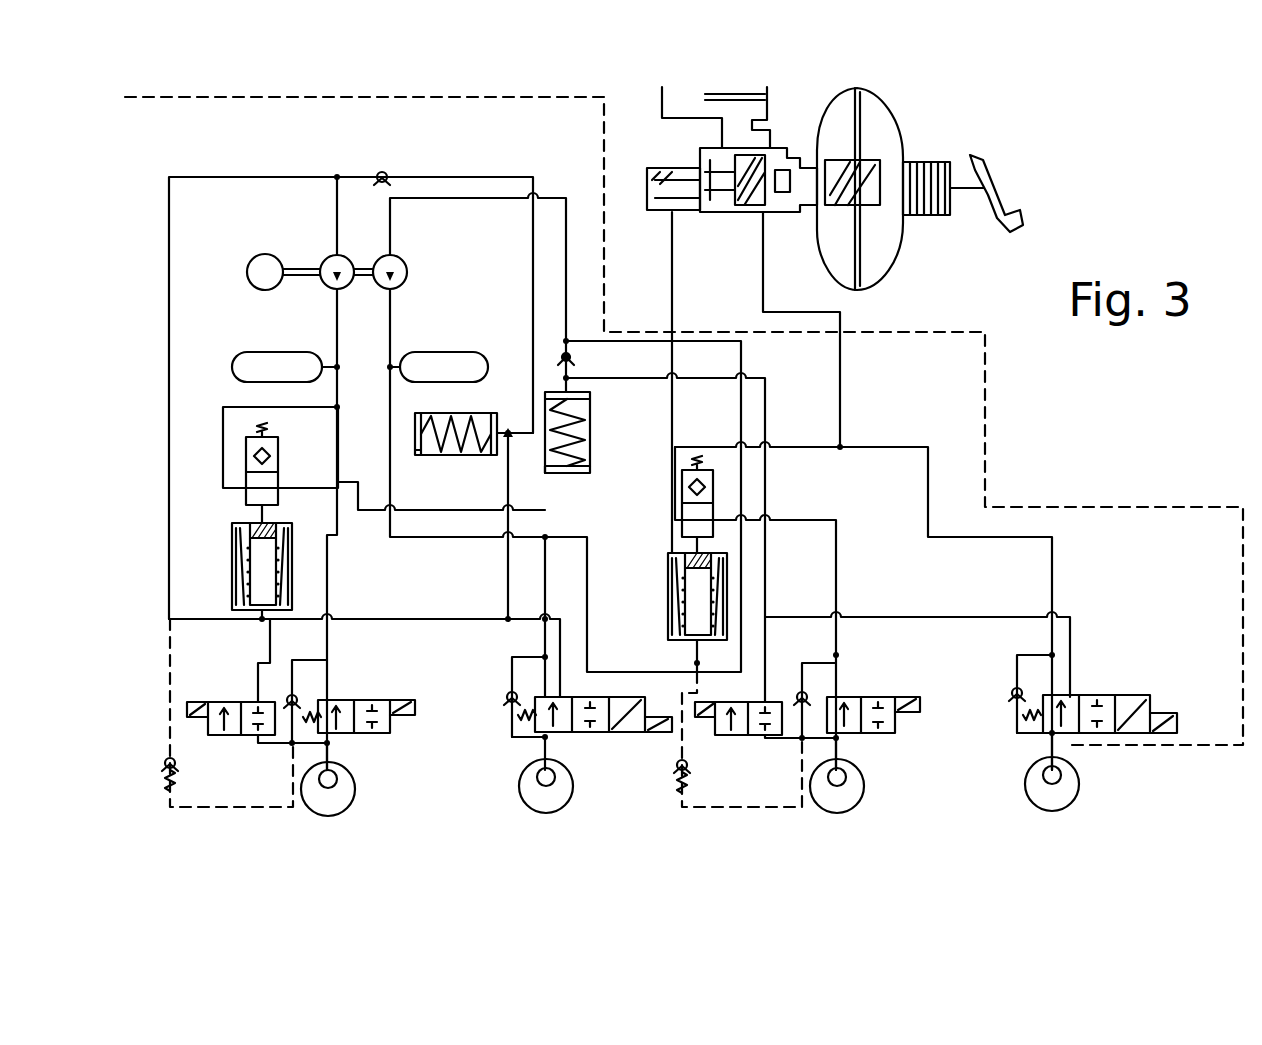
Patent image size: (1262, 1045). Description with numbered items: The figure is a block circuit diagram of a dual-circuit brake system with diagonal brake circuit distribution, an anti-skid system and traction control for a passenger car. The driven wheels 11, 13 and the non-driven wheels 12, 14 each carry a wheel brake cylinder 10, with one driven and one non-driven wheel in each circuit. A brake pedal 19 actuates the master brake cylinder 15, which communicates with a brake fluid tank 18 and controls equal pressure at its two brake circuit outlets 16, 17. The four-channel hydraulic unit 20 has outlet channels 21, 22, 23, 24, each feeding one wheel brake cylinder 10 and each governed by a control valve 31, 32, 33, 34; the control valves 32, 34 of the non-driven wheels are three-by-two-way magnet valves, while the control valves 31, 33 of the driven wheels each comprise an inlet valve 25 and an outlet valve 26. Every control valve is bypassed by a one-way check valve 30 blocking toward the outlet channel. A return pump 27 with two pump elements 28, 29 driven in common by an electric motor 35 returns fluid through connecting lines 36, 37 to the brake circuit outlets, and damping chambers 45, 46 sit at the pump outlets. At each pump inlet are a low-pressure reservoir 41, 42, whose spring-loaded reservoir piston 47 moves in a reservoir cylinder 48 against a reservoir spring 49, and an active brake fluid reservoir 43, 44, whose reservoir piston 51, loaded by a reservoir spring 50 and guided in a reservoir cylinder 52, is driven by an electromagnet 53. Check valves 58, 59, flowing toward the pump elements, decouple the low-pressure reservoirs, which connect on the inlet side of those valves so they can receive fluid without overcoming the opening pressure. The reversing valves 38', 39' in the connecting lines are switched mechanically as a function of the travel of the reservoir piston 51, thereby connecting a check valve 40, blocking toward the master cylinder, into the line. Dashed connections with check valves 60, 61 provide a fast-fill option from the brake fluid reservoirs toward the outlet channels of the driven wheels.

The wheel brake cylinder 10 is at (340, 779).
The driven wheel 11 is at (335, 805).
The non-driven wheel 12 is at (553, 800).
The driven wheel 13 is at (848, 800).
The non-driven wheel 14 is at (1058, 800).
The master brake cylinder 15 is at (740, 213).
The brake circuit outlet 16 is at (670, 214).
The brake circuit outlet 17 is at (767, 215).
The brake fluid tank 18 is at (705, 100).
The brake pedal 19 is at (992, 217).
The four-channel hydraulic unit 20 is at (988, 412).
The outlet channel 21 is at (340, 743).
The outlet channel 22 is at (550, 743).
The outlet channel 23 is at (800, 742).
The outlet channel 24 is at (1047, 742).
The inlet valve 25 is at (378, 700).
The outlet valve 26 is at (238, 702).
The return pump 27 is at (318, 248).
The pump element 28 is at (330, 292).
The pump element 29 is at (405, 283).
The one-way check valve 30 is at (288, 695).
The control valve 31 is at (340, 698).
The control valve 32 is at (605, 697).
The control valve 33 is at (850, 698).
The control valve 34 is at (1105, 696).
The electric motor 35 is at (250, 285).
The connecting line 36 is at (672, 425).
The connecting line 37 is at (805, 447).
The reversing valve 38' is at (280, 447).
The reversing valve 39' is at (757, 608).
The one-way check valve 40 is at (275, 440).
The low-pressure reservoir 41 is at (441, 510).
The low-pressure reservoir 42 is at (590, 470).
The brake fluid reservoir 43 is at (230, 577).
The brake fluid reservoir 44 is at (667, 592).
The damping chamber 45 is at (290, 381).
The damping chamber 46 is at (457, 381).
The reservoir piston 47 is at (490, 412).
The reservoir cylinder 48 is at (455, 457).
The reservoir spring 49 is at (415, 452).
The reservoir spring 50 is at (292, 602).
The reservoir piston 51 is at (273, 528).
The reservoir cylinder 52 is at (292, 582).
The electromagnet 53 is at (235, 560).
The check valve 58 is at (381, 170).
The check valve 59 is at (575, 357).
The check valve 60 is at (178, 767).
The one-way check valve 61 is at (677, 767).